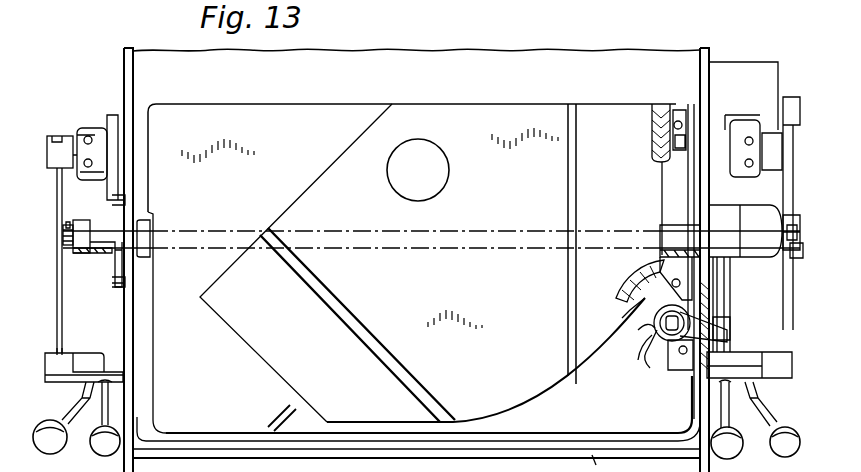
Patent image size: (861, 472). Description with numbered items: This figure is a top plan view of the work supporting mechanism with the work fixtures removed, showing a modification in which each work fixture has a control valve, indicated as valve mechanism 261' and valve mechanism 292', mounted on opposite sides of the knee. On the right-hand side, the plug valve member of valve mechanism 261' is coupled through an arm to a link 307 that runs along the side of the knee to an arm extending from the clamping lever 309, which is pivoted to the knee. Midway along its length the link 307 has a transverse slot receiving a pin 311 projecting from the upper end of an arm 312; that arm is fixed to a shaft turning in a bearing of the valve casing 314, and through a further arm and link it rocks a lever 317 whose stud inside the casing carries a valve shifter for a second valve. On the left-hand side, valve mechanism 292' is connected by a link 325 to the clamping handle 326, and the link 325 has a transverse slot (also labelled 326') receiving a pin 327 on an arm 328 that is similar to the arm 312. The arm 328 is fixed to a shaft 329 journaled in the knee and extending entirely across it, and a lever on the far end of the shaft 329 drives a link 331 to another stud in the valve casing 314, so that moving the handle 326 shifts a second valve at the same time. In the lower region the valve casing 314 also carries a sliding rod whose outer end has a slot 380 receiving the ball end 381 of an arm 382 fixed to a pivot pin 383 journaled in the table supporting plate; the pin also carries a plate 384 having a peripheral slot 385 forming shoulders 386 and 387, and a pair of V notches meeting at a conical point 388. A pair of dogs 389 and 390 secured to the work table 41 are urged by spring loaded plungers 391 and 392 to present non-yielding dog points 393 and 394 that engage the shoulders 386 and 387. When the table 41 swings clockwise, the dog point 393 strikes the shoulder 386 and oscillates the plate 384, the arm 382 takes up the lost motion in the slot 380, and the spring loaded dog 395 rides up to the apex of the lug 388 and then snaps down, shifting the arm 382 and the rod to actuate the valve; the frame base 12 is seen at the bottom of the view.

The frame base 12 is at (604, 463).
The work table 41 is at (466, 125).
The valve mechanism 261' is at (753, 136).
The valve mechanism 292' is at (86, 132).
The link 307 is at (775, 337).
The clamping lever 309 is at (732, 458).
The pin 311 is at (794, 226).
The arm 312 is at (800, 252).
The valve casing 314 is at (746, 70).
The lever 317 is at (803, 100).
The link 325 is at (62, 323).
The clamping handle 326 is at (139, 418).
The pin 326' is at (46, 249).
The pin 327 is at (78, 226).
The arm 328 is at (84, 255).
The shaft 329 is at (250, 234).
The link 331 is at (688, 200).
The slot or groove 380 is at (728, 330).
The ball end 381 is at (728, 338).
The arm 382 is at (718, 330).
The pivot pin 383 is at (666, 332).
The plate 384 is at (658, 338).
The slot 385 is at (648, 330).
The shoulder 386 is at (650, 336).
The shoulder 387 is at (665, 245).
The conical point 388 is at (656, 345).
The dog 389 is at (624, 300).
The dog 390 is at (678, 98).
The spring loaded plunger 391 is at (635, 286).
The spring loaded plunger 392 is at (670, 160).
The dog point 393 is at (632, 320).
The dog point 394 is at (684, 110).
The spring loaded dog 395 is at (674, 372).